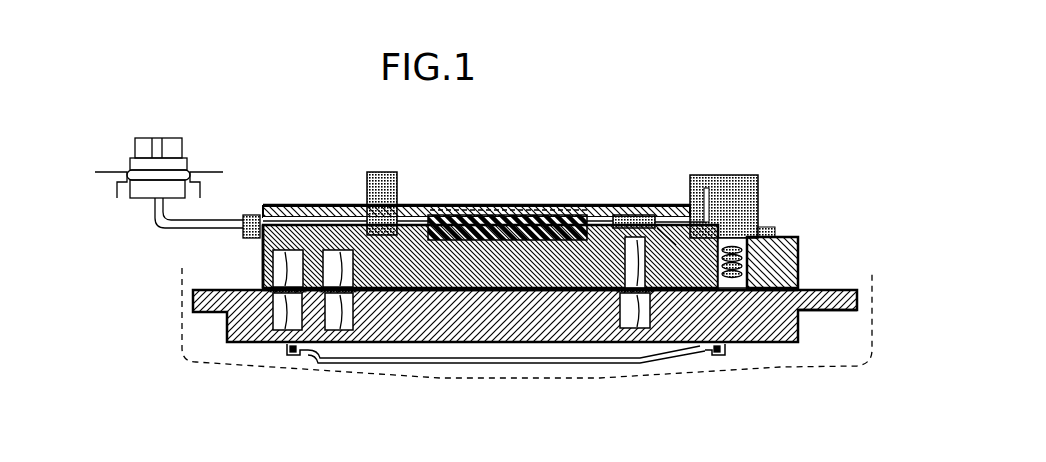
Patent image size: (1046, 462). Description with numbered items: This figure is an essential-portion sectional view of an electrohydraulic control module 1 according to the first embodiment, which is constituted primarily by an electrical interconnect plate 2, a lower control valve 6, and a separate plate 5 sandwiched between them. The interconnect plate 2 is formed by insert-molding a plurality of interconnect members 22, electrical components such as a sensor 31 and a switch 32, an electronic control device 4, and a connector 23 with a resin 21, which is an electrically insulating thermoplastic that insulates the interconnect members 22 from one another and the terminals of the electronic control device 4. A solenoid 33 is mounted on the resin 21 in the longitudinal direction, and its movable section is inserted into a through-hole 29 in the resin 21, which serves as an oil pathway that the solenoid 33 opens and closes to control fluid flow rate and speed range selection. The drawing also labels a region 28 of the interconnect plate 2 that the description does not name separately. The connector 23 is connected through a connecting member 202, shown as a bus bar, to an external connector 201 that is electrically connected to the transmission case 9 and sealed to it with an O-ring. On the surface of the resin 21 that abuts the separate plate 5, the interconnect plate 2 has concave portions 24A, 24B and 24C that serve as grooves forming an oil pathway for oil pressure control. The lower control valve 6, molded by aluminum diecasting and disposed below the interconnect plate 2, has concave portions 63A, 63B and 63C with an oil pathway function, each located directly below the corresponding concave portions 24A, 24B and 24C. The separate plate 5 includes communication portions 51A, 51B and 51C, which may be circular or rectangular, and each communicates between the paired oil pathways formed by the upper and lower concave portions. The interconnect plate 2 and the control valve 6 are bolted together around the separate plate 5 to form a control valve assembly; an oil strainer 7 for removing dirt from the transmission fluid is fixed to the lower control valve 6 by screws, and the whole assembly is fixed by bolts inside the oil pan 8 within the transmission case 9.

The electrohydraulic control module 1 is at (680, 107).
The electrical interconnect plate 2 is at (474, 200).
The electronic control device 4 is at (520, 215).
The separate plate 5 is at (800, 288).
The lower control valve 6 is at (856, 288).
The oil strainer 7 is at (673, 356).
The oil pan 8 is at (872, 318).
The transmission case 9 is at (112, 172).
The resin 21 is at (298, 205).
The interconnect members 22 is at (276, 221).
The connector 23 is at (250, 214).
The concave portion 24A is at (268, 262).
The concave portion 24B is at (345, 228).
The concave portion 24C is at (661, 222).
The channel member 28 is at (596, 206).
The through-hole 29 is at (745, 283).
The sensor 31 is at (382, 171).
The switch 32 is at (633, 213).
The solenoid 33 is at (758, 190).
The communication portion 51A is at (283, 330).
The communication portion 51B is at (346, 330).
The communication portion 51C is at (645, 330).
The concave portion 63A is at (240, 343).
The concave portion 63B is at (311, 350).
The concave portion 63C is at (628, 332).
The external connector 201 is at (185, 160).
The connecting member 202 is at (178, 228).